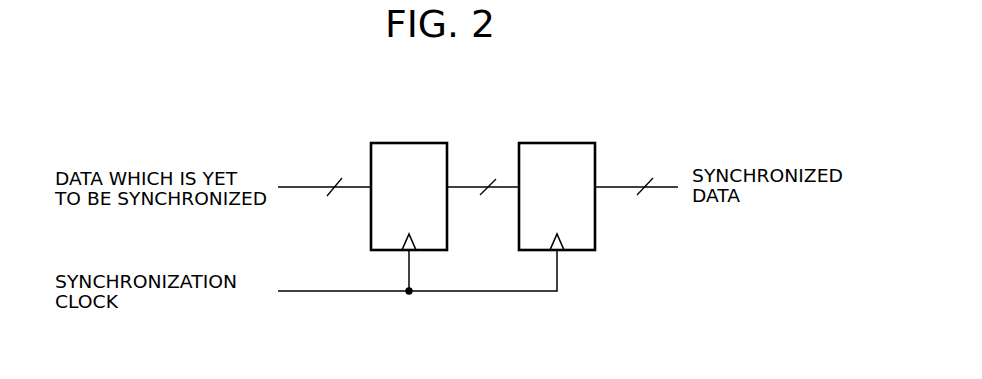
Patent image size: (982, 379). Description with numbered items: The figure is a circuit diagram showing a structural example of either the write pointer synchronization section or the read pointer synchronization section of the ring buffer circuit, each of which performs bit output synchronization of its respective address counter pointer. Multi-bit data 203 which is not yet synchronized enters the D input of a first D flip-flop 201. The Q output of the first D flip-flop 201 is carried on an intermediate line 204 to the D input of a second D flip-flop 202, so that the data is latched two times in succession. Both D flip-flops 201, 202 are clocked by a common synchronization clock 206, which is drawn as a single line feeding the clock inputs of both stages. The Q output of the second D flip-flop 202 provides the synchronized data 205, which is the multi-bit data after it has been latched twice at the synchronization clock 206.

The D flip-flop 201 is at (409, 142).
The D flip-flop 202 is at (557, 142).
The multi-bit data 203 is at (303, 185).
The intermediate signal line between flip-flops 204 is at (472, 185).
The synchronized data 205 is at (632, 185).
The synchronization clock 206 is at (304, 290).